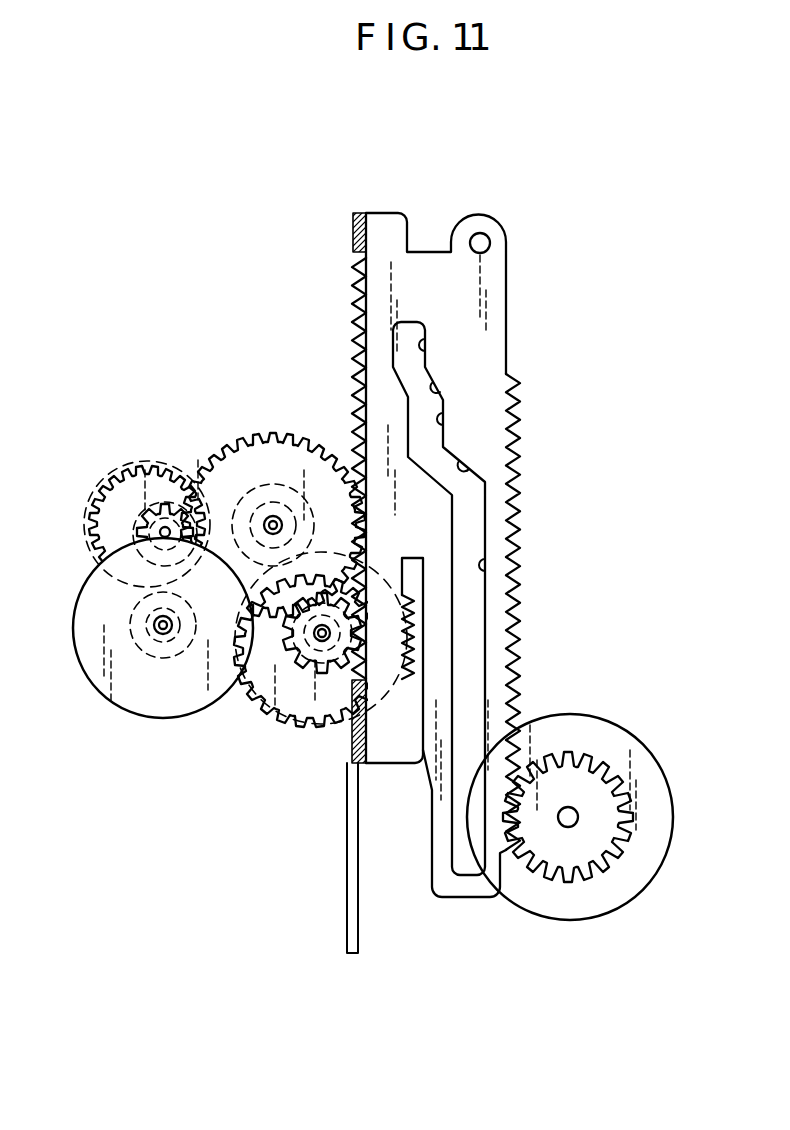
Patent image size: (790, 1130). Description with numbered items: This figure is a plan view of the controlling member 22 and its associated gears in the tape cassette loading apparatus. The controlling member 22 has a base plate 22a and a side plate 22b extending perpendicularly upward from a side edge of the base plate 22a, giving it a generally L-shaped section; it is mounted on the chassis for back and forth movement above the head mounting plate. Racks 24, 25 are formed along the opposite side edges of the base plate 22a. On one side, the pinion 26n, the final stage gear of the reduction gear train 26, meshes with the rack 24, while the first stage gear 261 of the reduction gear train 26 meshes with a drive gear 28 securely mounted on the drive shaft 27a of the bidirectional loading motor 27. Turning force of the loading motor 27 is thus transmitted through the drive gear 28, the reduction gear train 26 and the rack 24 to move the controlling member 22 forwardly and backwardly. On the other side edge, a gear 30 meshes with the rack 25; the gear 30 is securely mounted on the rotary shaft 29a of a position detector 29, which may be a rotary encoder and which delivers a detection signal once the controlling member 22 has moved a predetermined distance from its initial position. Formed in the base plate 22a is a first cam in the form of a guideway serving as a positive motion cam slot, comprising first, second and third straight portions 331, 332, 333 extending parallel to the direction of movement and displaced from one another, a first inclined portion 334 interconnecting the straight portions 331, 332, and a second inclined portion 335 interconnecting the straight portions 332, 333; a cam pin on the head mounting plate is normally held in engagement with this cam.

The controlling member 22 is at (347, 292).
The base plate 22a is at (507, 270).
The side plate 22b is at (348, 812).
The rack 24 is at (352, 400).
The rack 25 is at (521, 518).
The reduction gear train 26 is at (93, 536).
The first stage gear 261 is at (128, 477).
The pinion 26n is at (300, 700).
The bidirectional loading motor 27 is at (94, 689).
The drive shaft 27a is at (163, 637).
The drive gear 28 is at (139, 649).
The position detector 29 is at (557, 713).
The rotary shaft 29a is at (580, 822).
The gear 30 is at (600, 757).
The first straight portion 331 is at (485, 571).
The second straight portion 332 is at (446, 424).
The third straight portion 333 is at (428, 350).
The first inclined portion 334 is at (469, 471).
The second inclined portion 335 is at (440, 392).